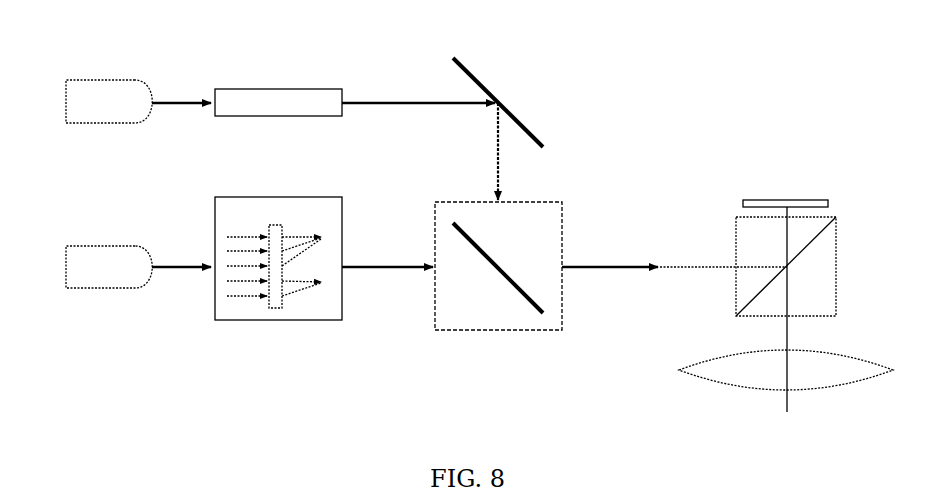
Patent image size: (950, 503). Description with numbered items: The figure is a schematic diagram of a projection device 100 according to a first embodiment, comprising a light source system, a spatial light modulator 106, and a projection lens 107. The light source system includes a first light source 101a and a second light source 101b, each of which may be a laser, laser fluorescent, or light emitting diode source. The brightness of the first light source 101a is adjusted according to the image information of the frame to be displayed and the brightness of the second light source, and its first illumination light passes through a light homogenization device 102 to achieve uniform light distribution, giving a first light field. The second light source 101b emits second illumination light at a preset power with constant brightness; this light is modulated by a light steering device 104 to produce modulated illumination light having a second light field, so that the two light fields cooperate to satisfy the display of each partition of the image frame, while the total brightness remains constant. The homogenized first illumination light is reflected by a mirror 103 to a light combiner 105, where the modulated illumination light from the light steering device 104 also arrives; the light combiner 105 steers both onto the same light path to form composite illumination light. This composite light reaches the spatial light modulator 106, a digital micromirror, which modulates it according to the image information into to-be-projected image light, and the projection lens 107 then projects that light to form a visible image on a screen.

The projection device 100 is at (690, 56).
The first light source 101a is at (99, 77).
The second light source 101b is at (99, 244).
The light homogenization device 102 is at (279, 87).
The mirror 103 is at (469, 64).
The light steering device 104 is at (277, 323).
The light combiner 105 is at (492, 331).
The spatial light modulator 106 is at (757, 198).
The projection lens 107 is at (691, 356).